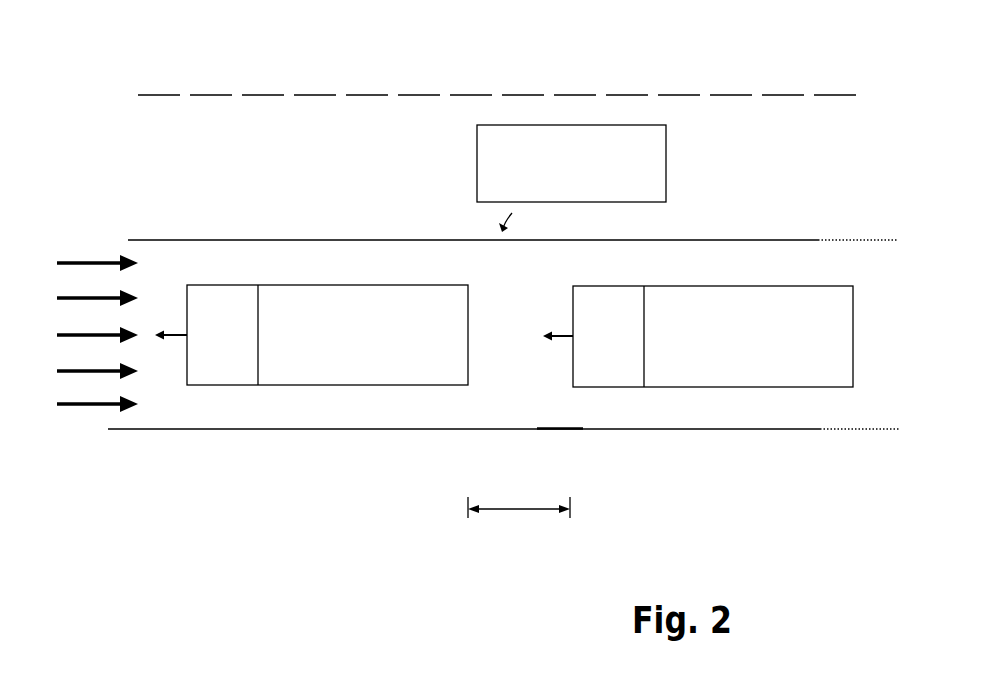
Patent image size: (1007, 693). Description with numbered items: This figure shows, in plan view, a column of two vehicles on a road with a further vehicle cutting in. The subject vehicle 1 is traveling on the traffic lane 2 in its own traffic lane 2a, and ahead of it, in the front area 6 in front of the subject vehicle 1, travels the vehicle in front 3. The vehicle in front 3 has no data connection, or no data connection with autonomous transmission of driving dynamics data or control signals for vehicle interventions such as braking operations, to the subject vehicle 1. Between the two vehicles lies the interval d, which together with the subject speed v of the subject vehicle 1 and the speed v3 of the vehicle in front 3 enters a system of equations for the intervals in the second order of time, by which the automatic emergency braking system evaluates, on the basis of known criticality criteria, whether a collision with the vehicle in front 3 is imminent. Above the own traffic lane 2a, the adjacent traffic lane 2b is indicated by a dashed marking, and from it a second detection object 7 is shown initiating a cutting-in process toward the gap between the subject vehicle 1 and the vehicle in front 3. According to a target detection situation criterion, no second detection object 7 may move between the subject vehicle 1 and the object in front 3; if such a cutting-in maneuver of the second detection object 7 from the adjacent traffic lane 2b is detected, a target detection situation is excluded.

The subject vehicle 1 is at (703, 310).
The traffic lane (road) 2 is at (782, 430).
The own traffic lane 2a is at (722, 415).
The adjacent traffic lane 2b is at (236, 118).
The vehicle in front 3 is at (325, 320).
The front area 6 is at (541, 383).
The second detection object 7 is at (507, 130).
The subject speed v is at (560, 340).
The speed of the object in front v3 is at (170, 340).
The interval d is at (519, 525).